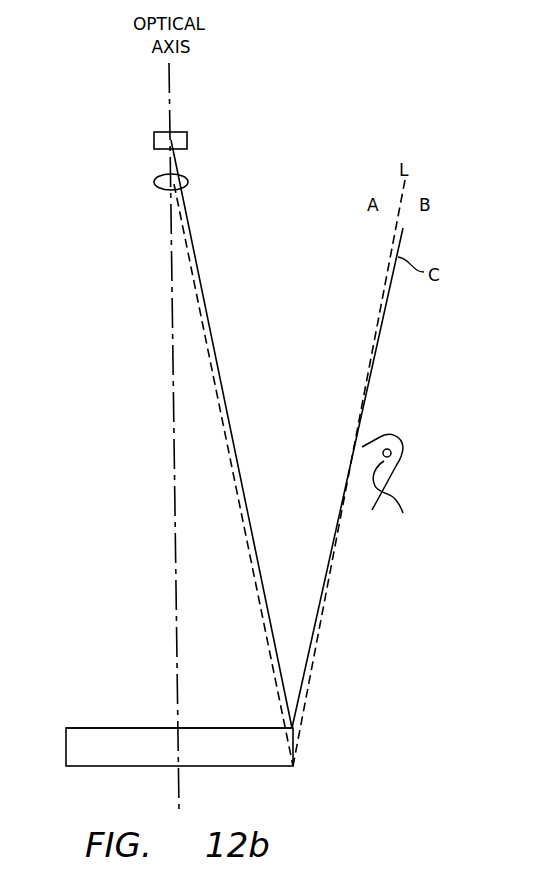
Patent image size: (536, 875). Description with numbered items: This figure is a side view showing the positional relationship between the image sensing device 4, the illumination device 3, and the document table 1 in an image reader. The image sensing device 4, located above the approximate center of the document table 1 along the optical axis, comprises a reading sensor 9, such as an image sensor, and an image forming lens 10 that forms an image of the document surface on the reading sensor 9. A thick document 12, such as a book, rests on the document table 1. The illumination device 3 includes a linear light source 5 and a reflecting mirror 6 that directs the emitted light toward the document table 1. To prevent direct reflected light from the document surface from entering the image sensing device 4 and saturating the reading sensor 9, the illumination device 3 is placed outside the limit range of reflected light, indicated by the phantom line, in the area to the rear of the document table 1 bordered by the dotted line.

The document table 1 is at (92, 776).
The illumination device 3 is at (401, 457).
The image sensing device 4 is at (171, 149).
The linear light source 5 is at (390, 497).
The reflecting mirror 6 is at (402, 455).
The reading sensor 9 is at (158, 133).
The image forming lens 10 is at (158, 180).
The document 12 is at (124, 722).